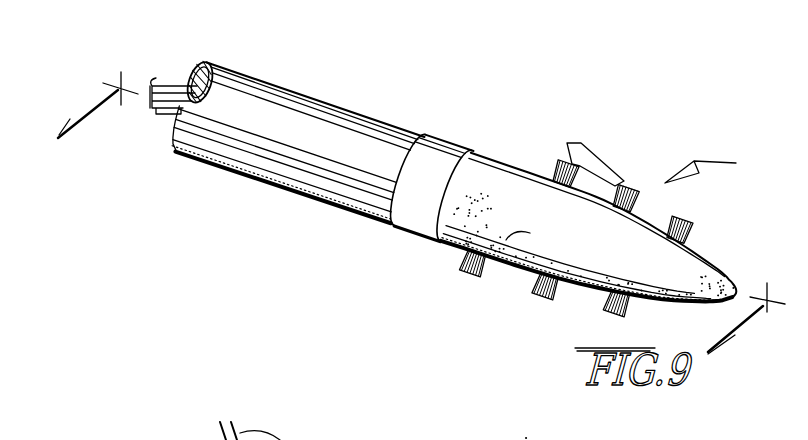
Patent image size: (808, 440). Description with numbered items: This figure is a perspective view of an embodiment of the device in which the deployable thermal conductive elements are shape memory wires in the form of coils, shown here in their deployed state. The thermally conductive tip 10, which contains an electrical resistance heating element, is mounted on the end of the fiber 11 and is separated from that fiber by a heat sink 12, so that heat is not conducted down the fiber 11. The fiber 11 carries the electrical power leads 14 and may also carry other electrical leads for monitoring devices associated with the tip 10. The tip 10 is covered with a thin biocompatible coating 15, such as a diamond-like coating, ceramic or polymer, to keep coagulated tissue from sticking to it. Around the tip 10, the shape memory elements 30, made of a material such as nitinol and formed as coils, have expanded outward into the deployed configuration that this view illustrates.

The thermally conductive tip 10 is at (426, 214).
The fiber 11 is at (333, 128).
The heat sink 12 is at (432, 163).
The electrical power leads 14 is at (163, 115).
The thin biocompatible coating 15 is at (513, 233).
The shape memory elements 30 is at (567, 143).